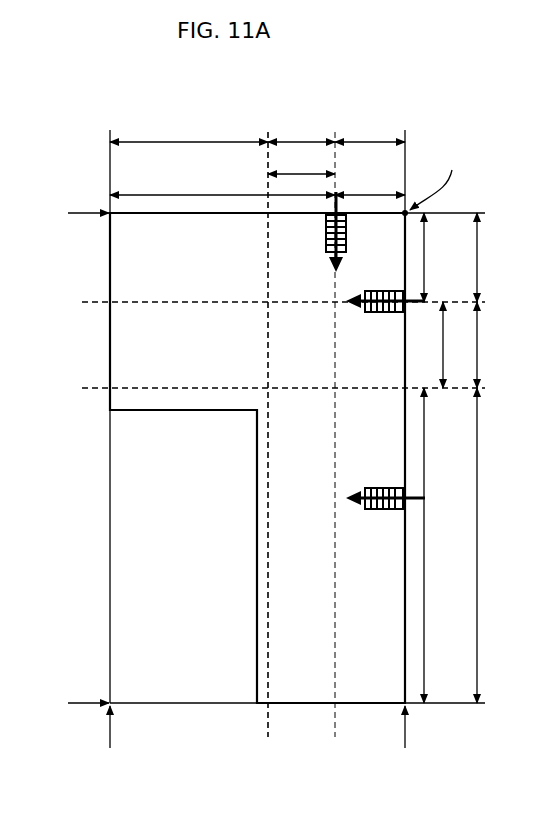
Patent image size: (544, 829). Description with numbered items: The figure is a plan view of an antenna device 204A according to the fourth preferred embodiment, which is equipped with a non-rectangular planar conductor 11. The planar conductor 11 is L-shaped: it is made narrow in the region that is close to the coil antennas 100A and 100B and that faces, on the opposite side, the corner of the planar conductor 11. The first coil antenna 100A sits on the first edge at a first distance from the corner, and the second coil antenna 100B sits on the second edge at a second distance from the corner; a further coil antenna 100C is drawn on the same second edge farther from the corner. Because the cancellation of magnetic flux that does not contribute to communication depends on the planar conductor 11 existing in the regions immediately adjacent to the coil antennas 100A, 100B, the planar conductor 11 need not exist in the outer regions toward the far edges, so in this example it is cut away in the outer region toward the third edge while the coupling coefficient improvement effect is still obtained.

The antenna device 204A is at (476, 69).
The planar conductor 11 is at (126, 346).
The first coil antenna 100A is at (326, 225).
The second coil antenna 100B is at (379, 313).
The third dicing / cutting direction indicator 100C is at (379, 510).